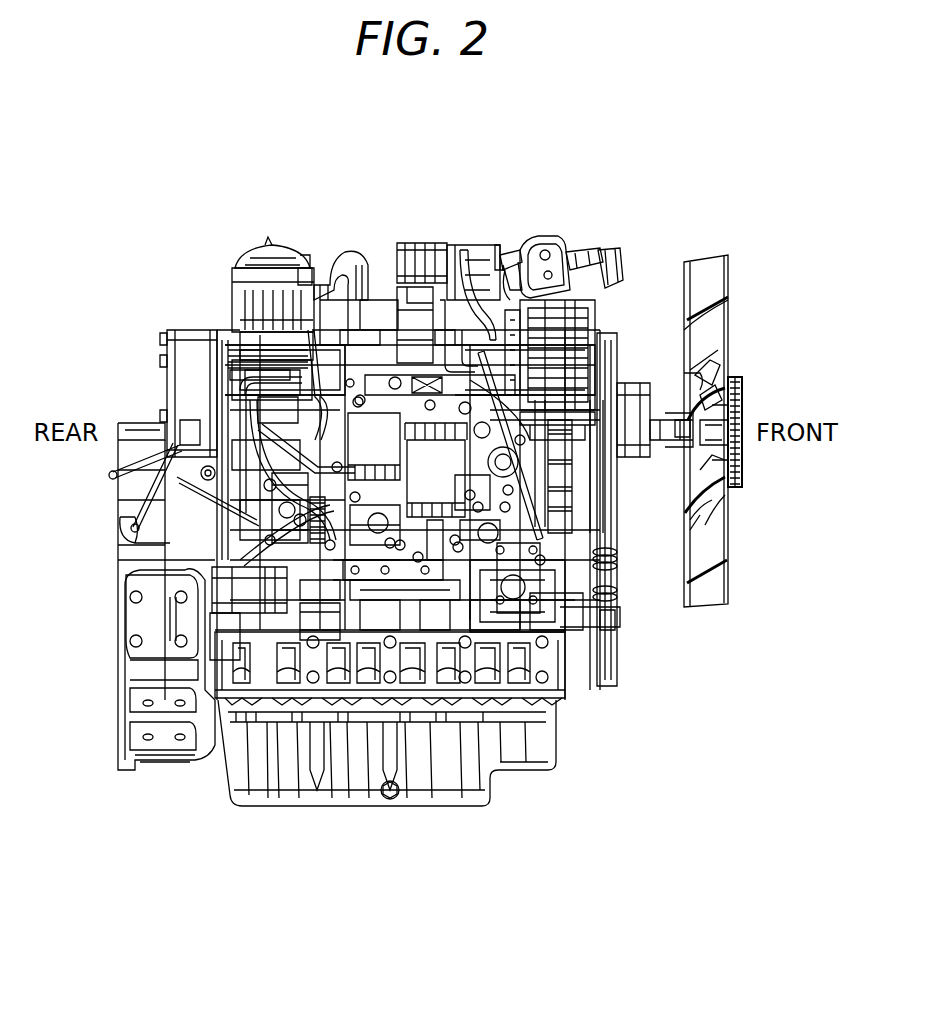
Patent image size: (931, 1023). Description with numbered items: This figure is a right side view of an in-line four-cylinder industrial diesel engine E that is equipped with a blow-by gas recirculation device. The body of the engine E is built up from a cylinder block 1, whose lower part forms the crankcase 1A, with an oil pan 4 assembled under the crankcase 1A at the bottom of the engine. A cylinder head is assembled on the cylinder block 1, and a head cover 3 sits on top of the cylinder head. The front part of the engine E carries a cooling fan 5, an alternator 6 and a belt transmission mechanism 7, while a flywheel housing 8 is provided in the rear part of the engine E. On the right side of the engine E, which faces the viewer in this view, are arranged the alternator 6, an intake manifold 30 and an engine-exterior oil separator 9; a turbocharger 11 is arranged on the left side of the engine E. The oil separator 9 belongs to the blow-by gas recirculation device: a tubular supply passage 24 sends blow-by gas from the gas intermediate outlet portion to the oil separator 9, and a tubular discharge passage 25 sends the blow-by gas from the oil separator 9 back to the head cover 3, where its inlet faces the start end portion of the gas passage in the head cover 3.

The engine E is at (598, 217).
The cylinder block 1 is at (430, 633).
The crankcase 1A is at (487, 637).
The head cover 3 is at (500, 265).
The oil pan 4 is at (290, 785).
The cooling fan 5 is at (715, 608).
The alternator 6 is at (600, 322).
The belt transmission mechanism 7 is at (618, 678).
The flywheel housing 8 is at (158, 740).
The oil separator 9 is at (240, 285).
The turbocharger 11 is at (455, 243).
The supply passage 24 is at (345, 250).
The discharge passage 25 is at (303, 255).
The intake manifold 30 is at (225, 355).